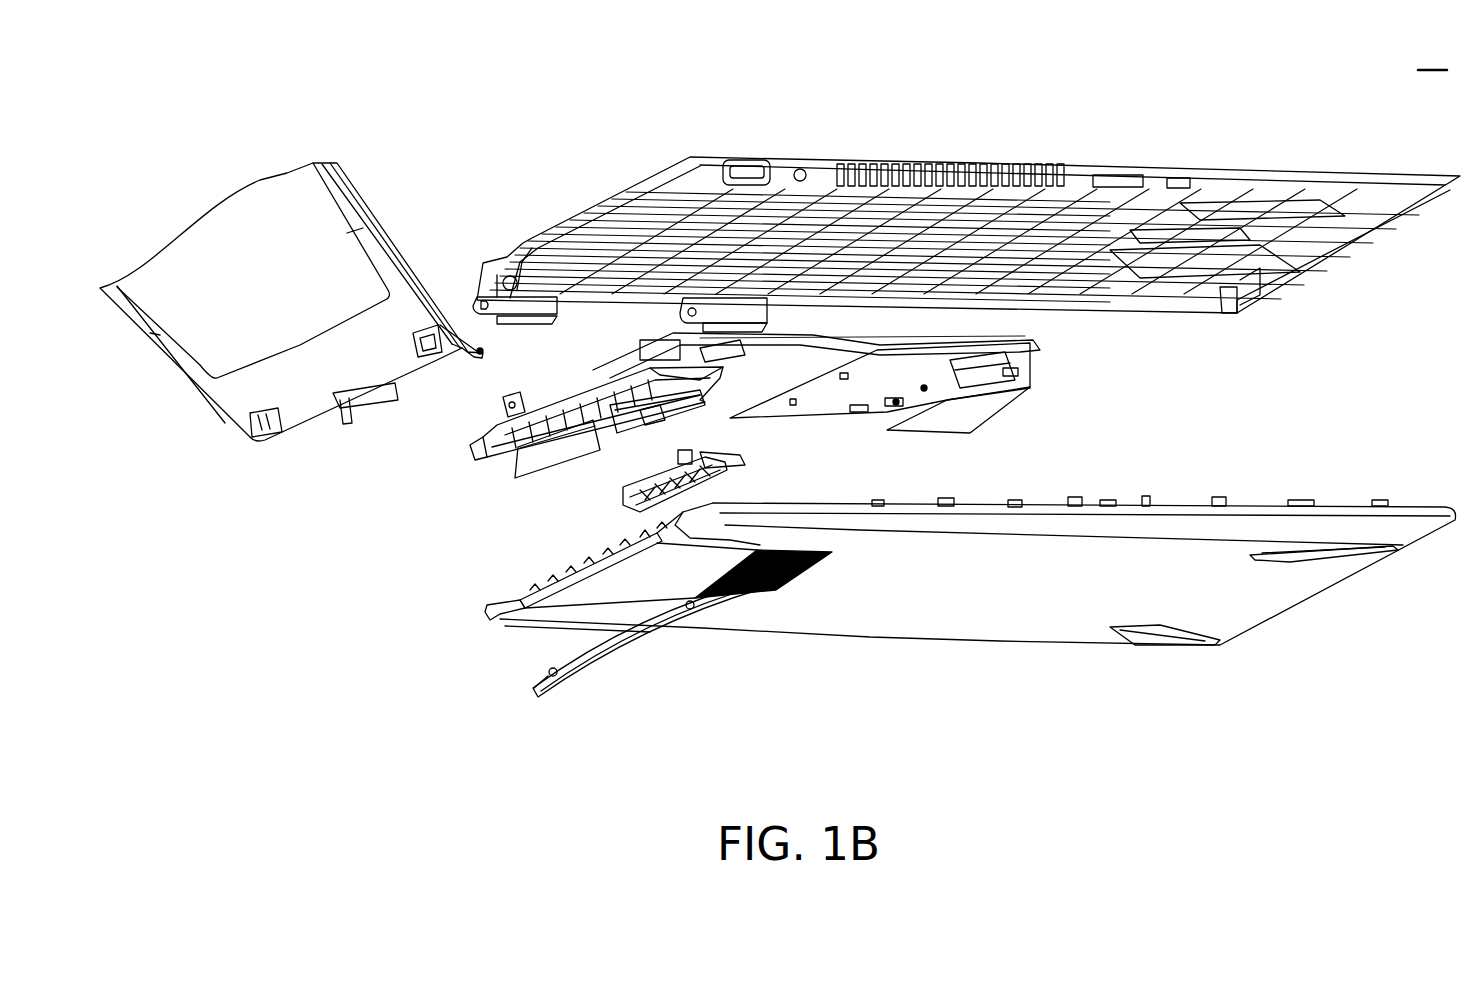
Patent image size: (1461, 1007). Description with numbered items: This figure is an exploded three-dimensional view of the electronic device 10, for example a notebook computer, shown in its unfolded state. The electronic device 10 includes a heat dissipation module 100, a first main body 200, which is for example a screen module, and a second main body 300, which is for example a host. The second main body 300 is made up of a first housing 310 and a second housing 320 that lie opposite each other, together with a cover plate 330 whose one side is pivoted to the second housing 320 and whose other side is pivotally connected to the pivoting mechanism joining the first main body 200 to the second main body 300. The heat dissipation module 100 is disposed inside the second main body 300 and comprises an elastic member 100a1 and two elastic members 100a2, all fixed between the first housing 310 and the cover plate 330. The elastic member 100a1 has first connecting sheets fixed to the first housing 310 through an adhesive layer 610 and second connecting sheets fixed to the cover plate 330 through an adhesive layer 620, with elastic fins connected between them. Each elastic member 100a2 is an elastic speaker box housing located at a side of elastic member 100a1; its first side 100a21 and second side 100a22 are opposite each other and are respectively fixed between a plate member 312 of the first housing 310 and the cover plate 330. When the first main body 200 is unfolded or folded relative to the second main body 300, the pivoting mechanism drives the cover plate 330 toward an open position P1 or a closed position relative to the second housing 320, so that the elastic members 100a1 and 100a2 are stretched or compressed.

The electronic device 10 is at (1329, 774).
The open position P1 is at (1432, 54).
The heat dissipation module 100 is at (347, 620).
The elastic member 100a1 is at (615, 506).
The elastic member 100a2 is at (625, 425).
The first side 100a21 is at (670, 398).
The second side 100a22 is at (656, 416).
The first main body 200 is at (217, 245).
The second main body 300 is at (966, 439).
The first housing 310 is at (1228, 176).
The plate member 312 is at (1010, 373).
The second housing 320 is at (1005, 622).
The cover plate 330 is at (637, 650).
The adhesive layer 610 is at (719, 462).
The adhesive layer 620 is at (682, 488).